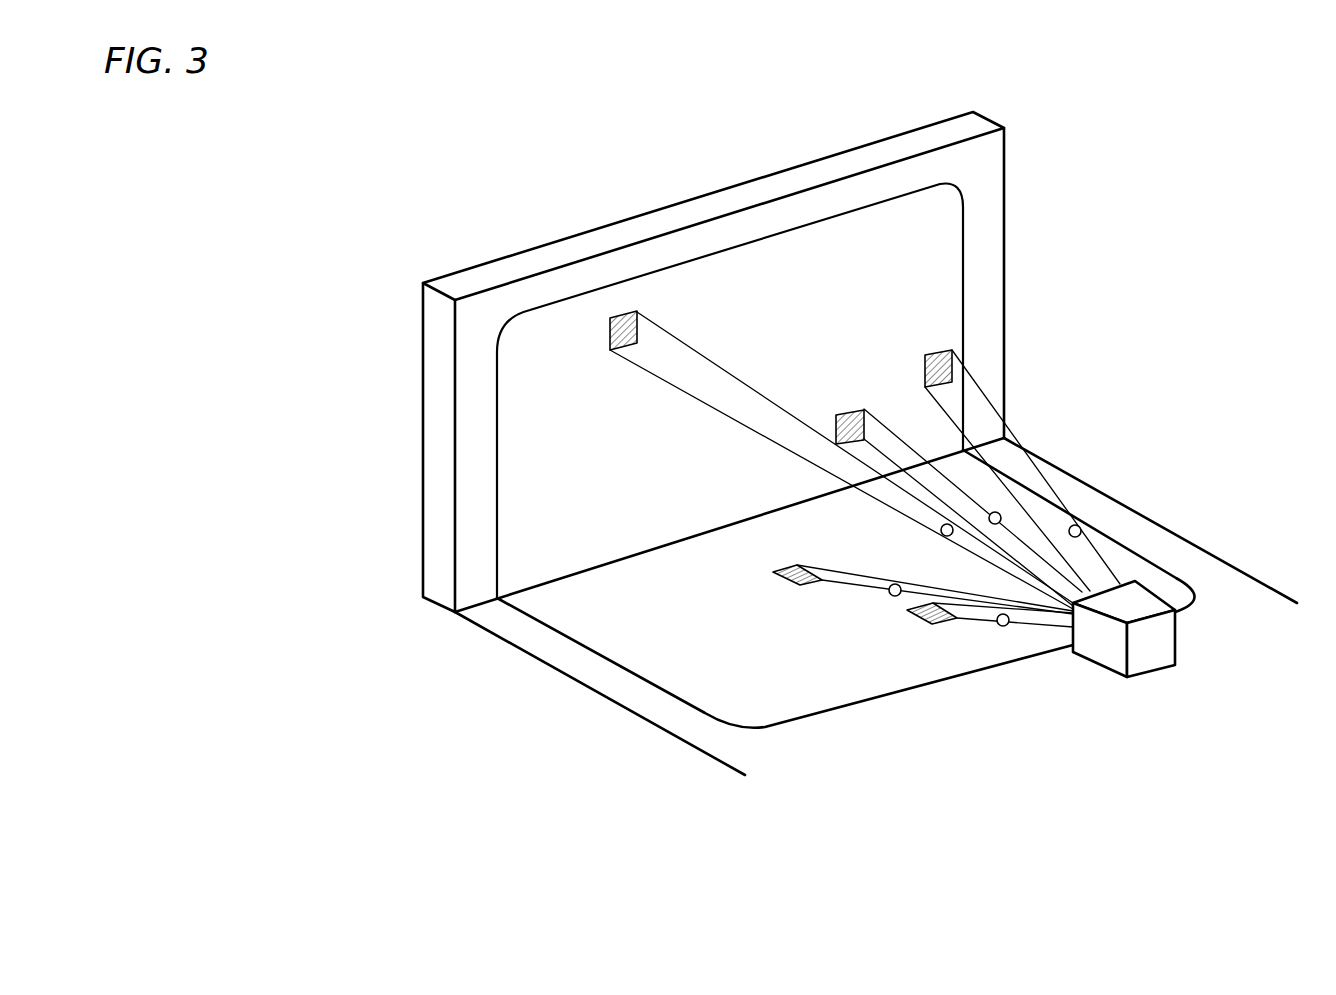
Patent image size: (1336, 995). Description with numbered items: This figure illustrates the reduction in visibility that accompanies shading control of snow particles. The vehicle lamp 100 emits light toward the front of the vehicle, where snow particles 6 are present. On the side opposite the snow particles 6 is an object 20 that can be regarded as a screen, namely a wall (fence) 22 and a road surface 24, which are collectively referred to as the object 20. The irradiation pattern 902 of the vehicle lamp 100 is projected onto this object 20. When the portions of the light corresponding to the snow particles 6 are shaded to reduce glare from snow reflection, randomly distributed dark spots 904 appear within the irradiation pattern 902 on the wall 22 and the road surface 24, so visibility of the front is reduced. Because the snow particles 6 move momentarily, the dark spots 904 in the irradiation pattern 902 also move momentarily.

The object 20 is at (330, 490).
The wall 22 is at (437, 462).
The road surface 24 is at (535, 642).
The irradiation pattern 902 is at (947, 273).
The dark spots 904 is at (637, 311).
The vehicle lamp 100 is at (1177, 638).
The snow particles 6 is at (940, 532).